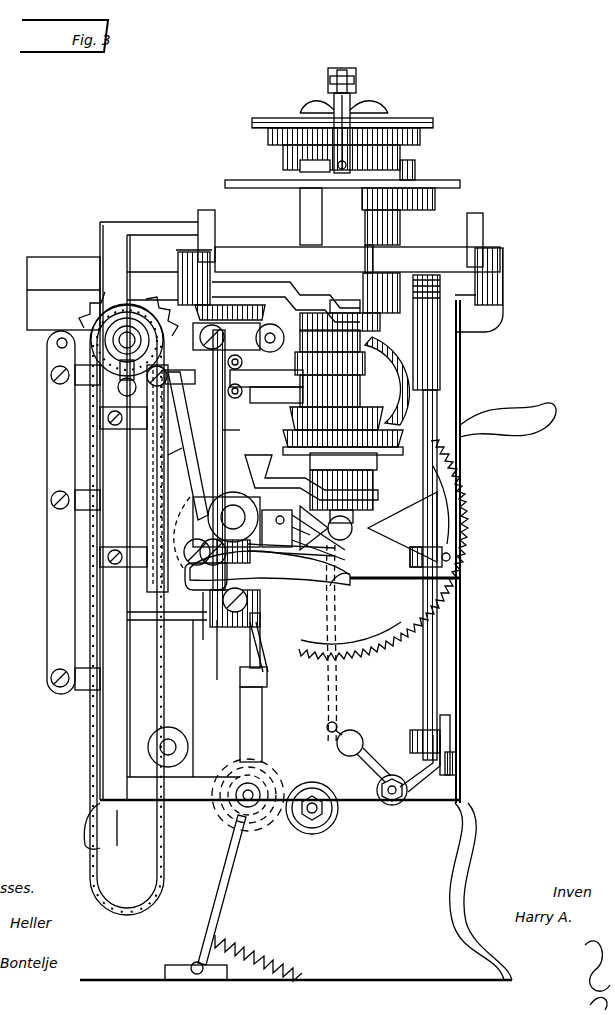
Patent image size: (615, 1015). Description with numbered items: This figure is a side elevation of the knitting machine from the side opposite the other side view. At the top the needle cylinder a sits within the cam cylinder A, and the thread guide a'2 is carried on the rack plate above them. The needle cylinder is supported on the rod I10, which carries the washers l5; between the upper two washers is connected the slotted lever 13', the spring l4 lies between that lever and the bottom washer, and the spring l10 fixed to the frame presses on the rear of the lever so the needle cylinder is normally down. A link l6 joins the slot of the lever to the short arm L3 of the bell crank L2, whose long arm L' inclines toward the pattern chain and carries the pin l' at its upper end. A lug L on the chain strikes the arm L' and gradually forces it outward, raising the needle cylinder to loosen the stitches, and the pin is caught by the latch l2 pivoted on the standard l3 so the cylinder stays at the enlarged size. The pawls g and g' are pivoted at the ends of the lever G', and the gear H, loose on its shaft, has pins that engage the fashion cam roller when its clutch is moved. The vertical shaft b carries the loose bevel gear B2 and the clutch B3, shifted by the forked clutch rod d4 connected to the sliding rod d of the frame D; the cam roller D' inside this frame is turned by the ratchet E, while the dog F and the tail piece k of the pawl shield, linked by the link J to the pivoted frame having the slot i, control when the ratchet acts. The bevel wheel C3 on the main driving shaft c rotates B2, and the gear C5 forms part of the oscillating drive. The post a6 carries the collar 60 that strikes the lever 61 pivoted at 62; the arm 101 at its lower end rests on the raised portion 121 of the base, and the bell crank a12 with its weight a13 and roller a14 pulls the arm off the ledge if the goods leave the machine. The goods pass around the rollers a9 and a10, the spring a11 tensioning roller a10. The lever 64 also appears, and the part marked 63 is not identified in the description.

The thread guide a'2 is at (360, 120).
The needle cylinder a is at (359, 145).
The cam cylinder A is at (418, 166).
The rod I10 is at (357, 259).
The pawl g is at (360, 257).
The pawl g' is at (112, 511).
The lever G' is at (349, 291).
The lever 13' is at (277, 302).
The gear H is at (350, 288).
The post a6 is at (430, 470).
The spring l10 is at (187, 317).
The washers l5 is at (280, 336).
The lug L is at (142, 610).
The bell crank lever L2 is at (190, 505).
The pin l' is at (188, 446).
The latch l2 is at (173, 369).
The standard l3 is at (213, 380).
The spring l4 is at (265, 370).
The clutch rod d4 is at (265, 393).
The bevel wheel C3 is at (400, 362).
The clutch B3 is at (400, 382).
The bevel gear B2 is at (395, 438).
The vertical shaft b is at (349, 428).
The link J is at (335, 488).
The rod d is at (254, 468).
The link l6 is at (231, 433).
The arm L' is at (188, 442).
The main driving shaft c is at (352, 527).
The gear C5 is at (450, 490).
The collar 60 is at (435, 560).
The lever 61 is at (462, 578).
The lever 64 is at (548, 410).
The ratchet E is at (318, 588).
The cam roller D' is at (291, 554).
The frame D is at (303, 529).
The tail piece k is at (301, 535).
The dog F is at (218, 492).
The slot i is at (216, 573).
The short arm L3 is at (193, 616).
The pivot 62 is at (250, 635).
The rod 63 is at (262, 640).
The roller a10 is at (245, 798).
The spring a11 is at (233, 898).
The roller a9 is at (318, 832).
The bell crank a12 is at (393, 806).
The weight a13 is at (364, 740).
The roller a14 is at (340, 727).
The arm 101 is at (440, 740).
The raised portion 121 is at (456, 766).